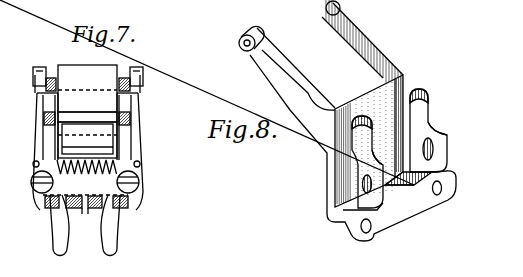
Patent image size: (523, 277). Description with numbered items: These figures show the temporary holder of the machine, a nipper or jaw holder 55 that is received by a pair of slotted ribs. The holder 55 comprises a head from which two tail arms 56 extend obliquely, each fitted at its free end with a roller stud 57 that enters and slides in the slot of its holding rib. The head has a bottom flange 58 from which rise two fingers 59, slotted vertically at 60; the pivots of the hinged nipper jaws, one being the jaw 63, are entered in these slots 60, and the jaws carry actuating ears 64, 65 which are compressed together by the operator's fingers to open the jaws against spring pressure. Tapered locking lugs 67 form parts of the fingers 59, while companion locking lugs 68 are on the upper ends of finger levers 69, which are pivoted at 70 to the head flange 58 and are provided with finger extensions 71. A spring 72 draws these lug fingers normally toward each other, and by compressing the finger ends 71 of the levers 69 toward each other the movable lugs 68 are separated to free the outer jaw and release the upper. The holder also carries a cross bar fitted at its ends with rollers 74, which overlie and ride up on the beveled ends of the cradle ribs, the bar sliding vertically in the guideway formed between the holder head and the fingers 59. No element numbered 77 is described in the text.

In FIG. 8, the nipper or jaw holder 55 is at (328, 152).
In FIG. 8, the tail arms 56 is at (280, 78).
In FIG. 8, the roller studs 57 is at (242, 36).
In FIG. 8, the bottom flange 58 is at (340, 218).
In FIG. 7, the fingers 59 is at (43, 125).
In FIG. 8, the fingers 59 is at (357, 163).
In FIG. 8, the slots 60 is at (363, 187).
In FIG. 7, the jaw 63 is at (107, 73).
In FIG. 7, the actuating ear 64 is at (87, 140).
In FIG. 7, the actuating ear 65 is at (85, 114).
In FIG. 8, the locking lugs 67 is at (427, 97).
In FIG. 7, the locking lugs 68 is at (47, 102).
In FIG. 7, the finger levers 69 is at (33, 145).
In FIG. 7, the pivot 70 is at (35, 190).
In FIG. 8, the pivot 70 is at (371, 232).
In FIG. 7, the finger extensions 71 is at (62, 225).
In FIG. 7, the spring 72 is at (80, 197).
In FIG. 7, the rollers 74 is at (40, 71).
In FIG. 7, the lower projection 77 is at (95, 208).